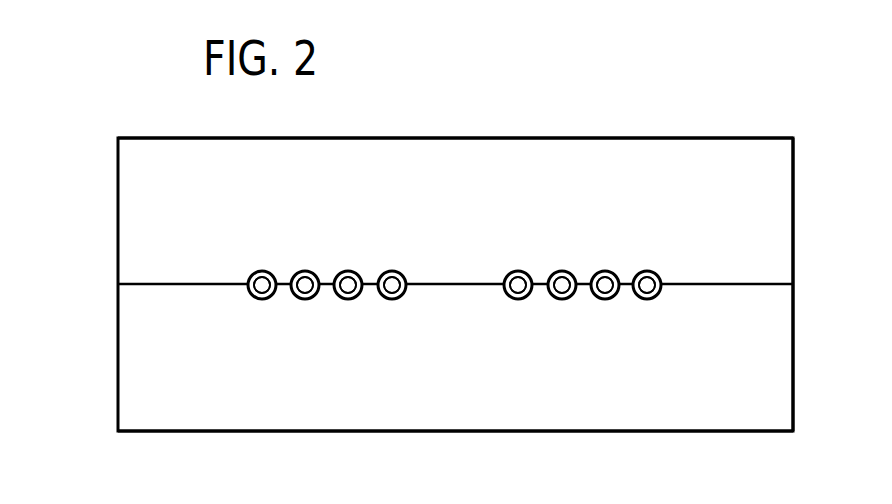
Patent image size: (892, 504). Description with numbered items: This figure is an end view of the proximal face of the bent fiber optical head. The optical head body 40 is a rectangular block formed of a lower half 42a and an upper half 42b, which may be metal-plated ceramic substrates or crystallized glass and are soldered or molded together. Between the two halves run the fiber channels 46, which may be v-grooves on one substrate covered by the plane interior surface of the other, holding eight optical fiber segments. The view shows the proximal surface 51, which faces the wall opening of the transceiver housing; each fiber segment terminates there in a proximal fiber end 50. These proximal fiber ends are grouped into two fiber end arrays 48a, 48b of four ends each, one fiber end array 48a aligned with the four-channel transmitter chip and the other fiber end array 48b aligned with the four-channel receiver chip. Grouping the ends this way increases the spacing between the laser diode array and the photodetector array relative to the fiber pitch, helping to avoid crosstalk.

The optical head body 40 is at (113, 218).
The lower half 42a is at (465, 419).
The upper half 42b is at (461, 152).
The fiber channels 46 is at (398, 283).
The fiber end array 48a is at (403, 262).
The fiber end array 48b is at (657, 262).
The proximal fiber end 50 is at (262, 294).
The proximal surface 51 is at (717, 198).